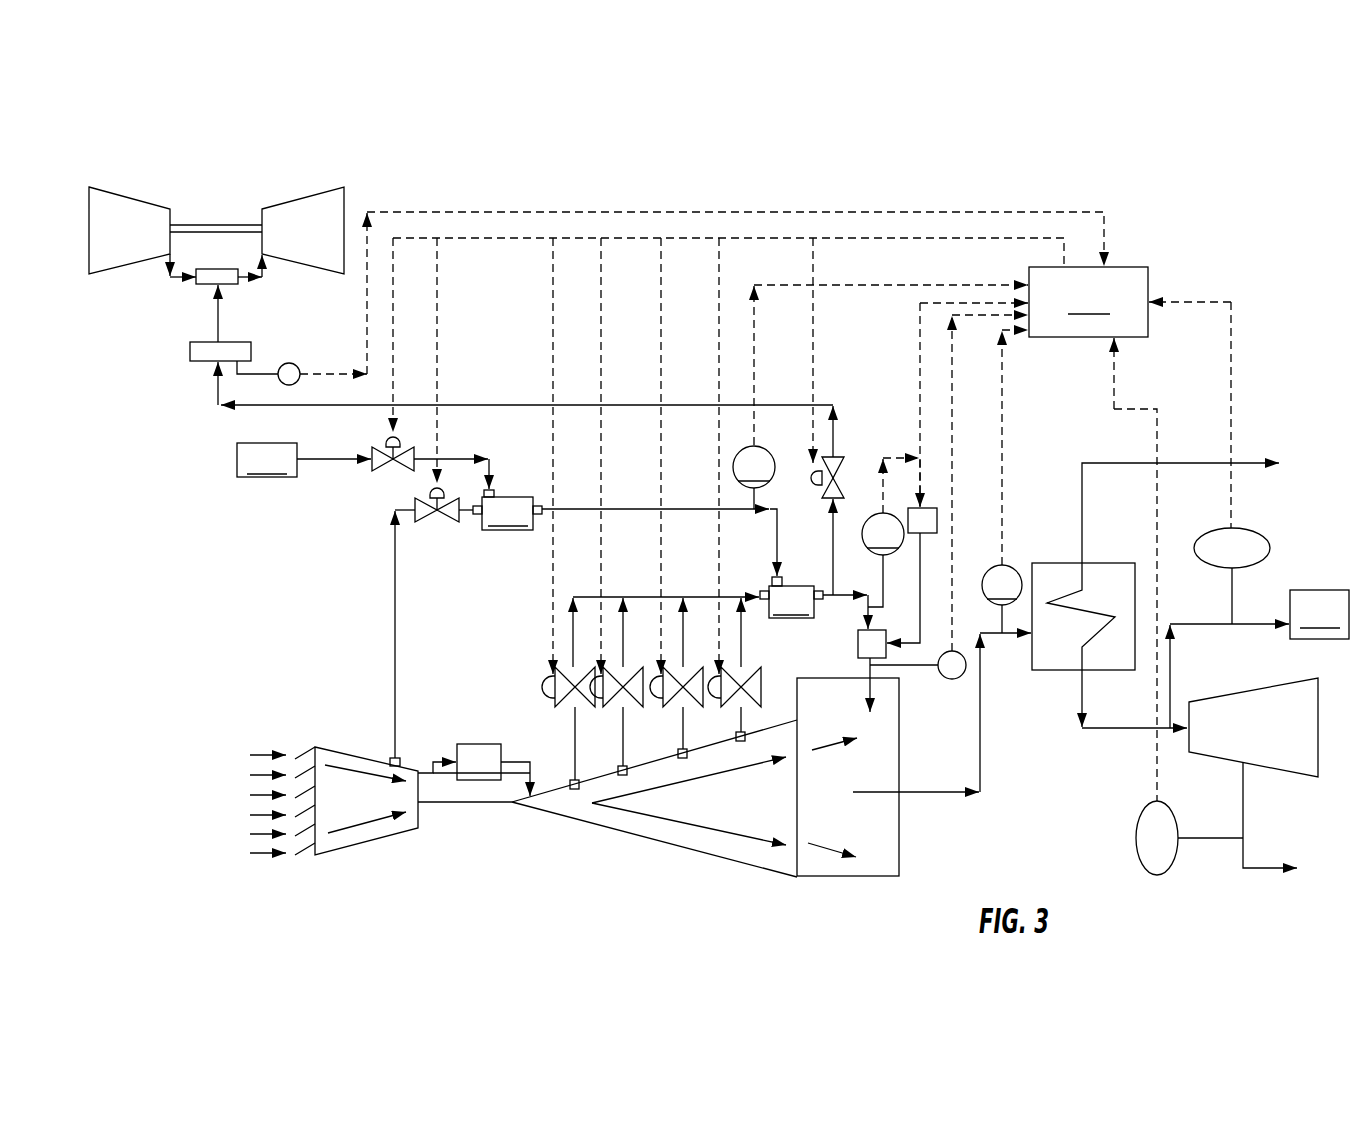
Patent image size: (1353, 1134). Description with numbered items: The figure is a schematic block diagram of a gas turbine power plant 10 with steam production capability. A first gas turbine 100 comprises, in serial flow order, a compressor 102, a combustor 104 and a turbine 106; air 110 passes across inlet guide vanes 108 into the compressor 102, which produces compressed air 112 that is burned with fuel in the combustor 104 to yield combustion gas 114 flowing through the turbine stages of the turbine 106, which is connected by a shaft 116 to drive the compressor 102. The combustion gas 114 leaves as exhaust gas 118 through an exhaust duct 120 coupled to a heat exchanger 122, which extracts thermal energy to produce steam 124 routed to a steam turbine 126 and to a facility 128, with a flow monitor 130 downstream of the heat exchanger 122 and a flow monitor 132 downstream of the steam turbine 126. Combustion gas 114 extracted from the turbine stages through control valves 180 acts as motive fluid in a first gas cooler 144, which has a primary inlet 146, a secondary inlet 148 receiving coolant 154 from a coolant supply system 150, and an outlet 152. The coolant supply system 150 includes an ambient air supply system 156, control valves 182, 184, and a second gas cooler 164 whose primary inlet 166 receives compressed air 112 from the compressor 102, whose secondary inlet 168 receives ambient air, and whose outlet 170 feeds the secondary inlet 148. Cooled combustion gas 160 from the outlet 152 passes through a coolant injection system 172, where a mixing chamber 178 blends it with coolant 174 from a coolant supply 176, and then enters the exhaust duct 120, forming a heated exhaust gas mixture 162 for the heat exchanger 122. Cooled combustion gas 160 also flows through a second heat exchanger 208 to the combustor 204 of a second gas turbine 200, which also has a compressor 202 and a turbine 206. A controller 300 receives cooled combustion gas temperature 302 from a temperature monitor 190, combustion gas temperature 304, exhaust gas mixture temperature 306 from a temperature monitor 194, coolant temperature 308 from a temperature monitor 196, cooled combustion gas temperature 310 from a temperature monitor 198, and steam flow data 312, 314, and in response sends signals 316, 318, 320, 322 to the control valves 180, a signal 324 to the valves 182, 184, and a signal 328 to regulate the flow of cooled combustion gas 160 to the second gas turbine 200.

The gas turbine power plant 10 is at (1190, 236).
The first gas turbine 100 is at (440, 876).
The compressor 102 is at (365, 758).
The combustor 104 is at (480, 743).
The turbine 106 is at (643, 837).
The inlet guide vanes 108 is at (303, 863).
The air 110 is at (255, 817).
The compressed air 112 is at (387, 780).
The combustion gas 114 is at (575, 740).
The shaft 116 is at (468, 805).
The exhaust gas 118 is at (835, 742).
The exhaust duct 120 is at (833, 877).
The heat exchanger 122 is at (1047, 670).
The steam 124 is at (1183, 622).
The steam turbine 126 is at (1277, 685).
The facility 128 is at (1319, 614).
The flow monitor 130 is at (1262, 565).
The flow monitor 132 is at (1136, 847).
The first gas cooler 144 is at (791, 602).
The primary inlet 146 is at (763, 600).
The secondary inlet 148 is at (782, 582).
The coolant supply system 150 is at (320, 500).
The outlet 152 is at (823, 596).
The coolant 154 is at (395, 613).
The ambient air supply system 156 is at (304, 460).
The cooled combustion gas 160 is at (218, 408).
The heated exhaust gas mixture 162 is at (982, 757).
The second gas cooler 164 is at (507, 513).
The primary inlet 166 is at (475, 516).
The secondary inlet 168 is at (494, 490).
The outlet 170 is at (542, 508).
The coolant injection system 172 is at (923, 548).
The coolant 174 is at (923, 592).
The coolant supply 176 is at (918, 508).
The mixing chamber 178 is at (858, 645).
The control valves 180 is at (553, 700).
The control valve 182 is at (438, 524).
The control valve 184 is at (373, 470).
The temperature monitor 190 is at (883, 534).
The temperature monitor 194 is at (1002, 599).
The temperature monitor 196 is at (754, 477).
The temperature monitor 198 is at (291, 362).
The second gas turbine 200 is at (216, 176).
The compressor 202 is at (138, 199).
The combustor 204 is at (196, 284).
The turbine 206 is at (300, 199).
The second heat exchanger 208 is at (190, 353).
The controller 300 is at (1088, 302).
The cooled combustion gas temperature 302 is at (920, 348).
The combustion gas temperature 304 is at (957, 372).
The exhaust gas mixture temperature 306 is at (1002, 410).
The coolant temperature 308 is at (755, 320).
The cooled combustion gas temperature 310 is at (328, 371).
The steam flow data 312 is at (1114, 375).
The steam flow data 314 is at (1232, 333).
The signal 316 is at (552, 294).
The signal 318 is at (602, 294).
The signal 320 is at (661, 294).
The signal 322 is at (719, 294).
The signal 324 is at (397, 312).
The signal 328 is at (814, 268).